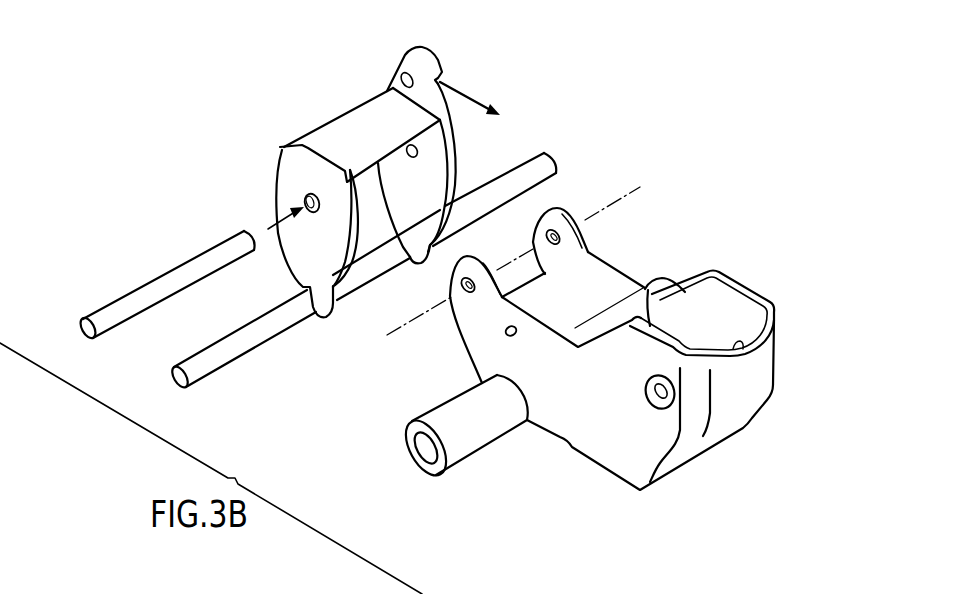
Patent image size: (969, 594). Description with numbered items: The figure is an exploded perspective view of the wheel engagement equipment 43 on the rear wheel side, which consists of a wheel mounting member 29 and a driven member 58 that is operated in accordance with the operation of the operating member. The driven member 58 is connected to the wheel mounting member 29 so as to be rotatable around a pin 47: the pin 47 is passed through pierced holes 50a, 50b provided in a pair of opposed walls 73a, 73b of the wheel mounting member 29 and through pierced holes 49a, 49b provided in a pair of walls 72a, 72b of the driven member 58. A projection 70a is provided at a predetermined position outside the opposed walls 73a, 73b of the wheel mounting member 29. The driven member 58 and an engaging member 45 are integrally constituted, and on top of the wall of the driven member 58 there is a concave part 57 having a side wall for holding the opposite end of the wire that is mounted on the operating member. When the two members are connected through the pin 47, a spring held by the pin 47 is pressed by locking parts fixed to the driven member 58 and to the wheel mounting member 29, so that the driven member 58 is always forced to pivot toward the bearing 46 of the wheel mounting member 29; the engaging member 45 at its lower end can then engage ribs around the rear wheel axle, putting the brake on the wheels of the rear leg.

The wheel mounting member 29 is at (757, 387).
The wheel engagement equipment 43 is at (659, 99).
The engaging member 45 is at (177, 375).
The bearing 46 is at (478, 438).
The pin 47 is at (147, 293).
The pierced hole 49a is at (303, 200).
The pierced hole 49b is at (413, 155).
The pierced hole 50a is at (463, 302).
The pierced hole 50b is at (581, 238).
The concave part 57 is at (431, 63).
The driven member 58 is at (357, 130).
The projection 70a is at (505, 337).
The wall 72a is at (303, 260).
The wall 72b is at (420, 190).
The opposed wall 73a is at (490, 330).
The opposed wall 73b is at (560, 257).